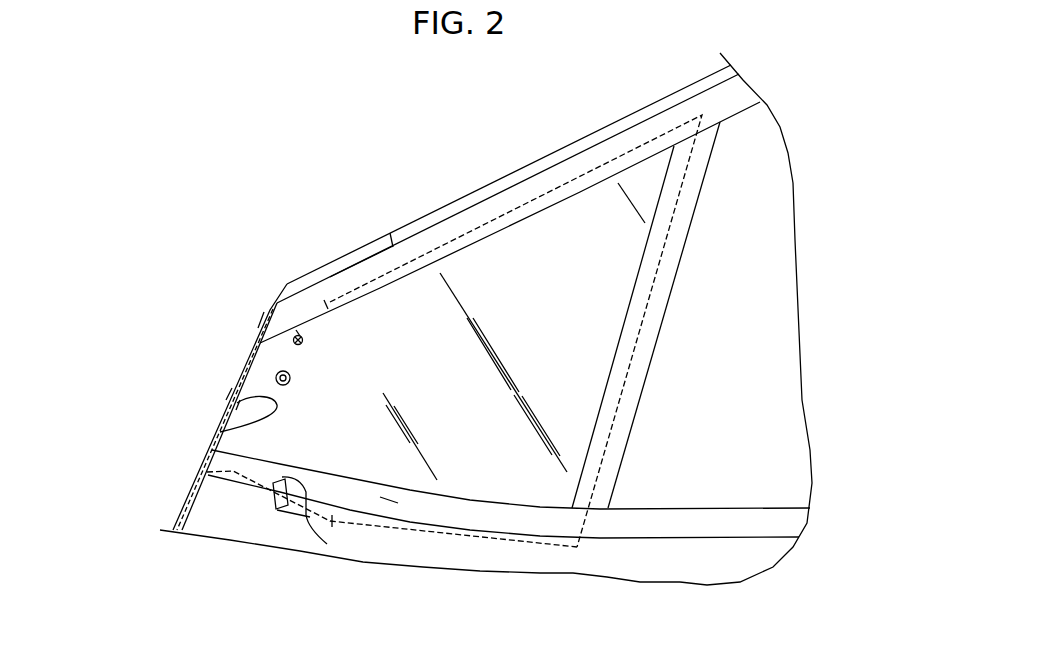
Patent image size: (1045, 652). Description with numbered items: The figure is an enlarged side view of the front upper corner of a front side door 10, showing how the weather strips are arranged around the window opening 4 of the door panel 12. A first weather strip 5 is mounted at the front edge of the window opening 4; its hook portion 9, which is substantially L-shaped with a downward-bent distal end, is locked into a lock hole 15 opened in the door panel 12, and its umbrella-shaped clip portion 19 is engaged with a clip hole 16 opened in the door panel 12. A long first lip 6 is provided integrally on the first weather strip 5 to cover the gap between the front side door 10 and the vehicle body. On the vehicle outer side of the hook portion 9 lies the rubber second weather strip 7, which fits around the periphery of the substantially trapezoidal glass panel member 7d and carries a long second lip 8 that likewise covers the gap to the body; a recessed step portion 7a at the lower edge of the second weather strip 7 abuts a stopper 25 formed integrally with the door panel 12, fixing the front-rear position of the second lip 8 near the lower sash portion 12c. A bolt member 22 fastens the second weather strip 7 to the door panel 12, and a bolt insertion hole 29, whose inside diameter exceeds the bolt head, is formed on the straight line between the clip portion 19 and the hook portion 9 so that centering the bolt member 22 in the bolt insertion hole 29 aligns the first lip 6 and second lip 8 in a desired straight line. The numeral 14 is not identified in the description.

The window opening 4 is at (667, 508).
The first weather strip 5 is at (371, 236).
The first lip 6 is at (262, 317).
The second weather strip 7 is at (423, 550).
The step portion 7a is at (307, 513).
The glass panel member 7d is at (497, 457).
The second lip 8 is at (227, 395).
The hook portion 9 is at (220, 432).
The front side door 10 is at (164, 511).
The door panel 12 is at (287, 532).
The lower sash portion 12c is at (390, 500).
The sash molding 14 is at (356, 282).
The lock hole 15 is at (237, 403).
The clip hole 16 is at (303, 333).
The clip portion 19 is at (298, 336).
The bolt member 22 is at (256, 328).
The stopper 25 is at (270, 488).
The bolt insertion hole 29 is at (274, 380).